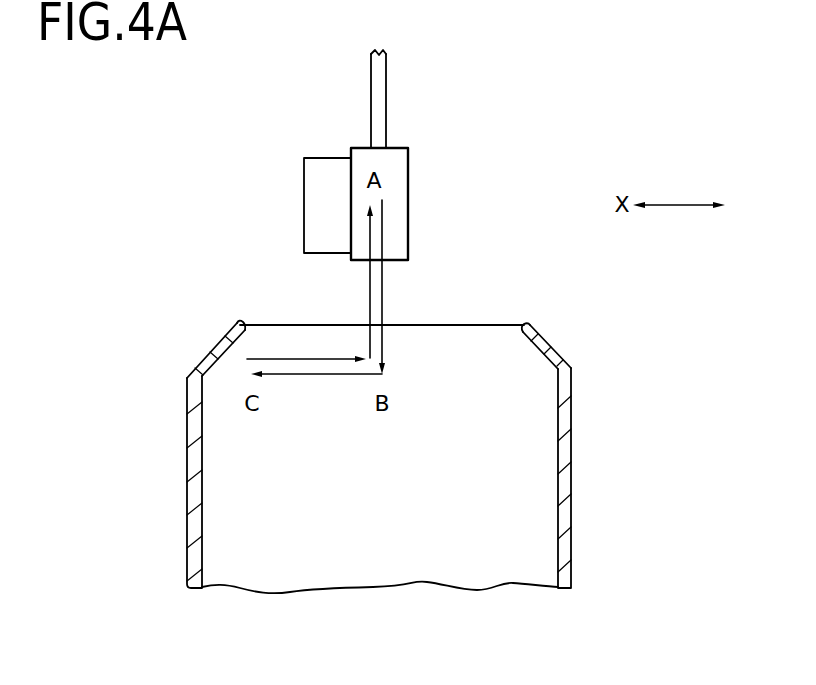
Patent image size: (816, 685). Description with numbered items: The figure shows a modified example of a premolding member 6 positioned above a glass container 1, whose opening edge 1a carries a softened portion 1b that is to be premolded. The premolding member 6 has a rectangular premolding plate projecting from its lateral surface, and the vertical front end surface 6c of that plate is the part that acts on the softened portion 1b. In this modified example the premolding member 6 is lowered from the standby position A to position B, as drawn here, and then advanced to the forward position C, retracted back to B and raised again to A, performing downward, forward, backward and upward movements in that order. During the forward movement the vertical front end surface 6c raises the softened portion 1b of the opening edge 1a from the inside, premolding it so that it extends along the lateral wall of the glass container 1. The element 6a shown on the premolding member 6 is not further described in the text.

The glass container 1 is at (572, 481).
The opening edge 1a is at (545, 333).
The softened portion 1b is at (217, 340).
The premolding member 6 is at (450, 110).
The nozzle body 6a is at (400, 153).
The vertical front end surface 6c is at (308, 183).